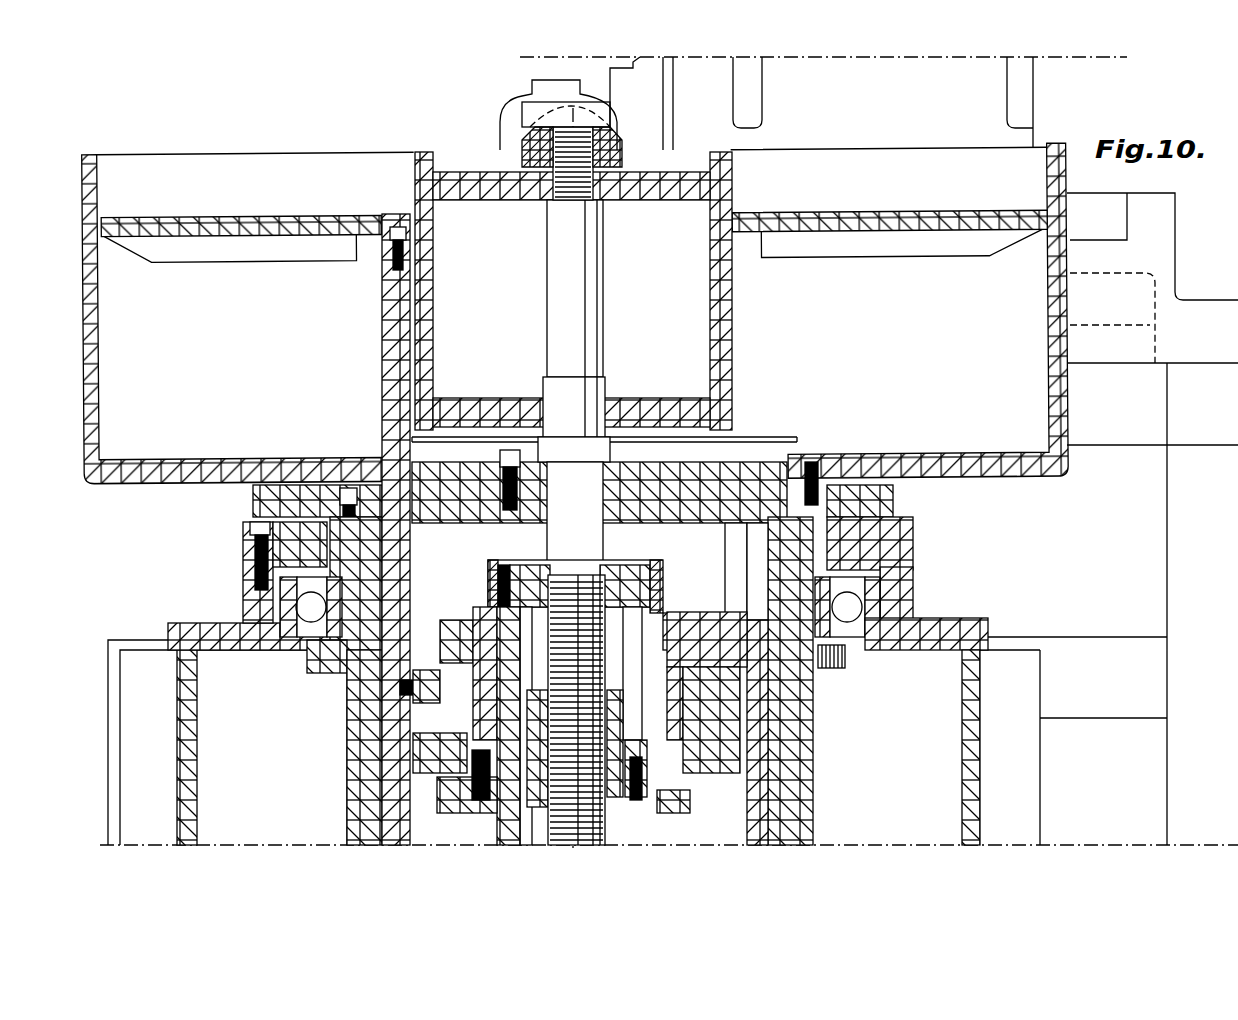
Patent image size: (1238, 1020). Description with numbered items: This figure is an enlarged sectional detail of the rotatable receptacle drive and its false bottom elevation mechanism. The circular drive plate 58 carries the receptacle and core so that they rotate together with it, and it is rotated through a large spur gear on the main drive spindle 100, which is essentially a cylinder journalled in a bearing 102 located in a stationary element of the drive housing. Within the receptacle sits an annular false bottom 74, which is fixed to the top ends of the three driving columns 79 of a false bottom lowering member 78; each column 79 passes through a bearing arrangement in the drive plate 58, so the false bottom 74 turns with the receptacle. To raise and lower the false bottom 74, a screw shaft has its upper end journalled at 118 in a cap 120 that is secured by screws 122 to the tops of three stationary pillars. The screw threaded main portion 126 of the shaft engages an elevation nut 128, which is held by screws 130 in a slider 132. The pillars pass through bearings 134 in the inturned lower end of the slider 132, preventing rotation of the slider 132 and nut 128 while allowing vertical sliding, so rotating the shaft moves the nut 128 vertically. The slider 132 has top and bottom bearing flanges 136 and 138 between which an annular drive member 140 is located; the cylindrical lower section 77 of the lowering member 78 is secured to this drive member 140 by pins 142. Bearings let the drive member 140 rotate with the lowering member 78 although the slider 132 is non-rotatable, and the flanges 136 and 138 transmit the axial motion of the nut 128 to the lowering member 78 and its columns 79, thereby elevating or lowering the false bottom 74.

The drive plate 58 is at (880, 505).
The annular false bottom 74 is at (337, 223).
The cylindrical lower section 77 is at (392, 782).
The false bottom lowering member 78 is at (363, 678).
The driving columns 79 is at (393, 322).
The main drive spindle 100 is at (347, 822).
The bearing 102 is at (905, 593).
The journal 118 is at (612, 595).
The cap 120 is at (663, 590).
The screws 122 is at (490, 580).
The screw threaded main portion 126 is at (663, 618).
The elevation nut 128 is at (625, 800).
The screws 130 is at (690, 755).
The slider 132 is at (690, 693).
The bearings 134 is at (560, 735).
The top bearing flange 136 is at (458, 625).
The bottom bearing flange 138 is at (450, 810).
The annular drive member 140 is at (385, 762).
The pins 142 is at (385, 728).